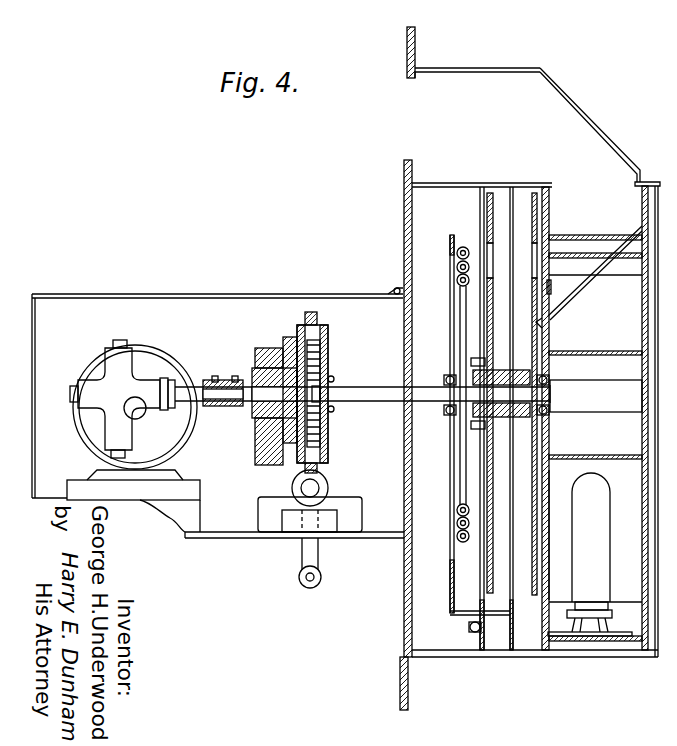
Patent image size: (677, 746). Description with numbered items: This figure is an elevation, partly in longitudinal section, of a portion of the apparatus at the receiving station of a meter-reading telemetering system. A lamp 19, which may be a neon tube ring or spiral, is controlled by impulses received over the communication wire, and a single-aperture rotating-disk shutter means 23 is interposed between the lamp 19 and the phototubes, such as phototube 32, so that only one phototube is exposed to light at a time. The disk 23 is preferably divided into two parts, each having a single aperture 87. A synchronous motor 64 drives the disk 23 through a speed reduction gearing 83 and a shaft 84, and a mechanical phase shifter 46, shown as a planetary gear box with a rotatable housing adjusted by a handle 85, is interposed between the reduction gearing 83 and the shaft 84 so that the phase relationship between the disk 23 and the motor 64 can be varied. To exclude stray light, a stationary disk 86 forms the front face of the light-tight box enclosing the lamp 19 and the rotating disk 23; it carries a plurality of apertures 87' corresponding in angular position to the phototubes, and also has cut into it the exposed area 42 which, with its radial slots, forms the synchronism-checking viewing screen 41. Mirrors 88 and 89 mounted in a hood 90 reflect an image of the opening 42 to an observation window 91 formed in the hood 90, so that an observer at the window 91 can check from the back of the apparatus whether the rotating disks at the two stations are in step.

The lamp 19 is at (463, 542).
The single-aperture rotating-disk shutter means 23 is at (533, 305).
The phototube 32 is at (598, 499).
The synchronism-checking viewing screen 41 is at (551, 246).
The exposed area 42 is at (549, 286).
The mechanical phase shifter 46 is at (323, 446).
The synchronous motor 64 is at (160, 356).
The speed reduction gearing 83 is at (142, 379).
The shaft 84 is at (360, 392).
The handle 85 is at (300, 557).
The stationary disk 86 is at (548, 226).
The aperture 87 is at (512, 394).
The apertures 87' is at (557, 535).
The mirror 88 is at (606, 262).
The mirror 89 is at (593, 126).
The hood 90 is at (452, 72).
The observation window 91 is at (425, 125).